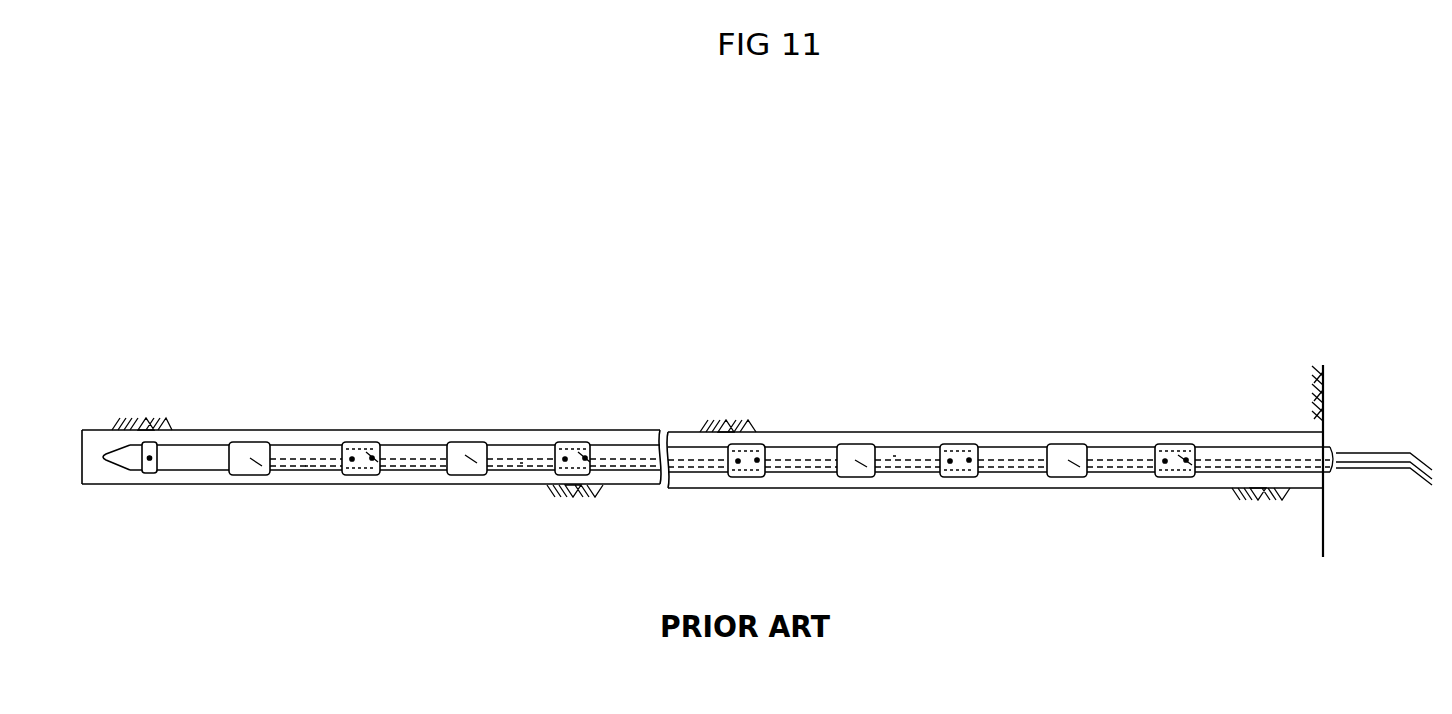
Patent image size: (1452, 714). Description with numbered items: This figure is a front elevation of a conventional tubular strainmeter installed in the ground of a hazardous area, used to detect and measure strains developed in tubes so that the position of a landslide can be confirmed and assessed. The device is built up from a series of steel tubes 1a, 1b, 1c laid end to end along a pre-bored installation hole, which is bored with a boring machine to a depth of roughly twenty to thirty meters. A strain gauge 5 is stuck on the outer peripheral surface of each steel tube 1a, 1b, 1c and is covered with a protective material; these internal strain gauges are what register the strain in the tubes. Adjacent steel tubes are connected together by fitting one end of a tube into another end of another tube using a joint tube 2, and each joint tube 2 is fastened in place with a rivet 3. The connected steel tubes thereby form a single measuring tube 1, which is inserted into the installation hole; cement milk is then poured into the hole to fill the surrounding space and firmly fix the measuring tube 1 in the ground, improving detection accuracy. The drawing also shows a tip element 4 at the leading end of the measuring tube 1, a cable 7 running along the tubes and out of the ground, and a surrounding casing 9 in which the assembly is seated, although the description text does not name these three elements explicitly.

The measuring tube 1 is at (745, 447).
The steel tube 1a is at (199, 472).
The steel tube 1b is at (420, 470).
The steel tube 1c is at (633, 473).
The joint tube 2 is at (358, 450).
The rivet 3 is at (372, 456).
The tip 4 is at (133, 442).
The strain gauge 5 is at (250, 458).
The cable 7 is at (305, 465).
The casing 9 is at (998, 437).